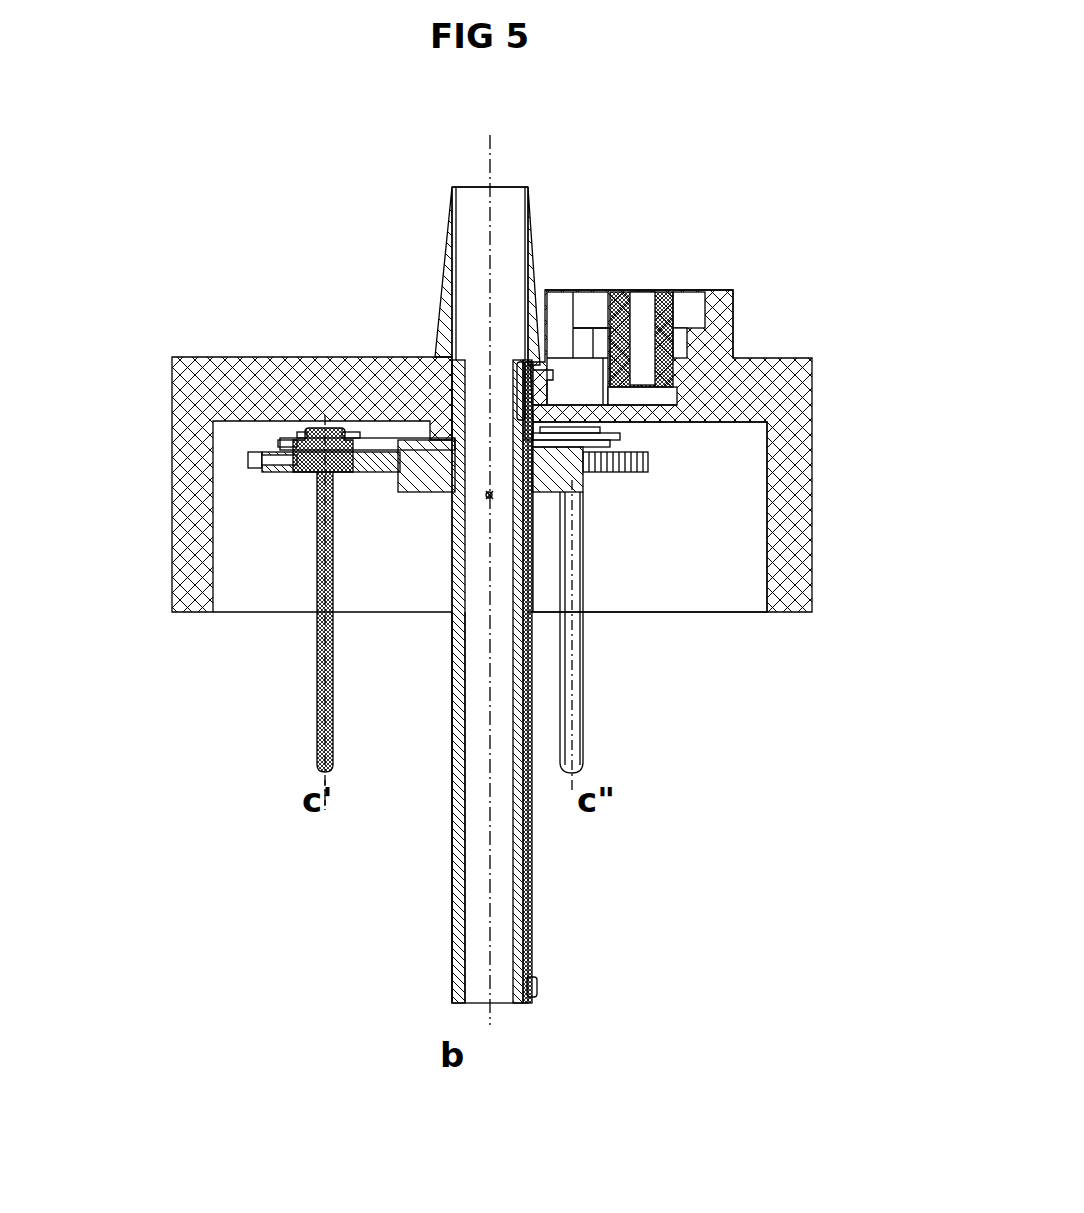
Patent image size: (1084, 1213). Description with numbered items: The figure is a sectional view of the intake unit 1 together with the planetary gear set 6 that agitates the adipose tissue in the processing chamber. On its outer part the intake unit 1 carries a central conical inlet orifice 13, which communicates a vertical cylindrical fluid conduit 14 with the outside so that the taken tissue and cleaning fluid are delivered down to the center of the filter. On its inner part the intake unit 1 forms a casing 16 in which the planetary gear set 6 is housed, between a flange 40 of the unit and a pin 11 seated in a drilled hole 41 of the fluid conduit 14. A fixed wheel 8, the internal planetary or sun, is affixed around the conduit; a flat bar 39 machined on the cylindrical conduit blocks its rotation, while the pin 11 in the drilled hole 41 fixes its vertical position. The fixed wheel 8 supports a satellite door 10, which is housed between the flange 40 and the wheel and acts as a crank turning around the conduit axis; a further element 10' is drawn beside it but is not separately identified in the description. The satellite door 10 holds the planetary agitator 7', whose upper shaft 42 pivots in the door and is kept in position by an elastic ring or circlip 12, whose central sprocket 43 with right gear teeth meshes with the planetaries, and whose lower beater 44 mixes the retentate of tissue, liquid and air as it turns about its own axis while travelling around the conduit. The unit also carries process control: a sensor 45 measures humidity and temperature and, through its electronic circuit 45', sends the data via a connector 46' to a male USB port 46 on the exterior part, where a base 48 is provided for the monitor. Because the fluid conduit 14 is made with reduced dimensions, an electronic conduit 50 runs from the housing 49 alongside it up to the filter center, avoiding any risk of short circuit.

The intake unit 1 is at (833, 348).
The planetary gear set 6 is at (288, 767).
The planetary agitator 7' is at (605, 635).
The fixed wheel 8 is at (557, 473).
The satellite door 10 is at (231, 397).
The spring plate 10' is at (367, 360).
The pin 11 is at (489, 497).
The elastic ring 12 is at (285, 433).
The conical inlet orifice 13 is at (452, 237).
The fluid conduit 14 is at (483, 897).
The casing 16 is at (707, 520).
The flat bar 39 is at (455, 840).
The flange 40 is at (403, 467).
The drilled hole 41 is at (485, 497).
The shaft 42 is at (312, 428).
The sprocket 43 is at (247, 460).
The beater 44 is at (313, 680).
The sensor 45 is at (597, 973).
The electronic circuit 45' is at (553, 291).
The USB port 46 is at (725, 244).
The connector 46' is at (604, 252).
The base 48 is at (735, 308).
The housing 49 is at (595, 323).
The electronic conduit 50 is at (537, 883).